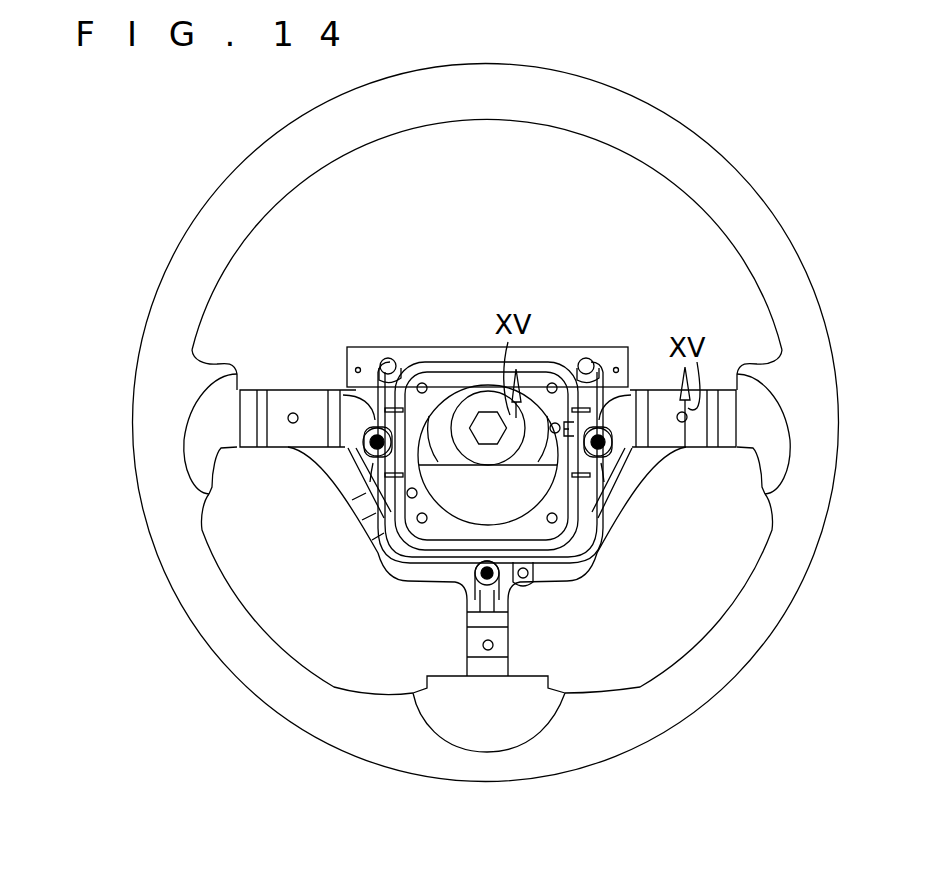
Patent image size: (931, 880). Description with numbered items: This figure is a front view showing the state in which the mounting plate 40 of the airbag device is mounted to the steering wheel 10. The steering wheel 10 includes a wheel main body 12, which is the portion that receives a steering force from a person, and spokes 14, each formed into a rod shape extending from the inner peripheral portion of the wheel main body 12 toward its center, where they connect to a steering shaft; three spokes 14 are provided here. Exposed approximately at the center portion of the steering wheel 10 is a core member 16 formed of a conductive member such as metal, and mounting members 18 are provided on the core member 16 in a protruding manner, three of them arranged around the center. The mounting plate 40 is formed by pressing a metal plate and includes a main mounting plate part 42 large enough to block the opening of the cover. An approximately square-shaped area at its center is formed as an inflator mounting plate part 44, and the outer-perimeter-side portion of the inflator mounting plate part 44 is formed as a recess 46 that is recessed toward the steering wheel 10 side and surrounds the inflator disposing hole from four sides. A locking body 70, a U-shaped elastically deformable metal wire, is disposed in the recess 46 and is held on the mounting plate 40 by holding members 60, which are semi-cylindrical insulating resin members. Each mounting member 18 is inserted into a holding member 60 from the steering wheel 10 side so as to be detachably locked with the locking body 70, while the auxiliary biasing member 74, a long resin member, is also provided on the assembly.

The steering wheel 10 is at (630, 75).
The wheel main body 12 is at (704, 167).
The spoke 14 is at (279, 400).
The core member 16 is at (610, 513).
The mounting member 18 is at (370, 421).
The mounting plate 40 is at (418, 347).
The main mounting plate part 42 is at (556, 347).
The inflator mounting plate part 44 is at (465, 370).
The recess 46 is at (412, 542).
The holding member 60 is at (362, 470).
The locking body 70 is at (378, 533).
The auxiliary biasing member 74 is at (386, 358).